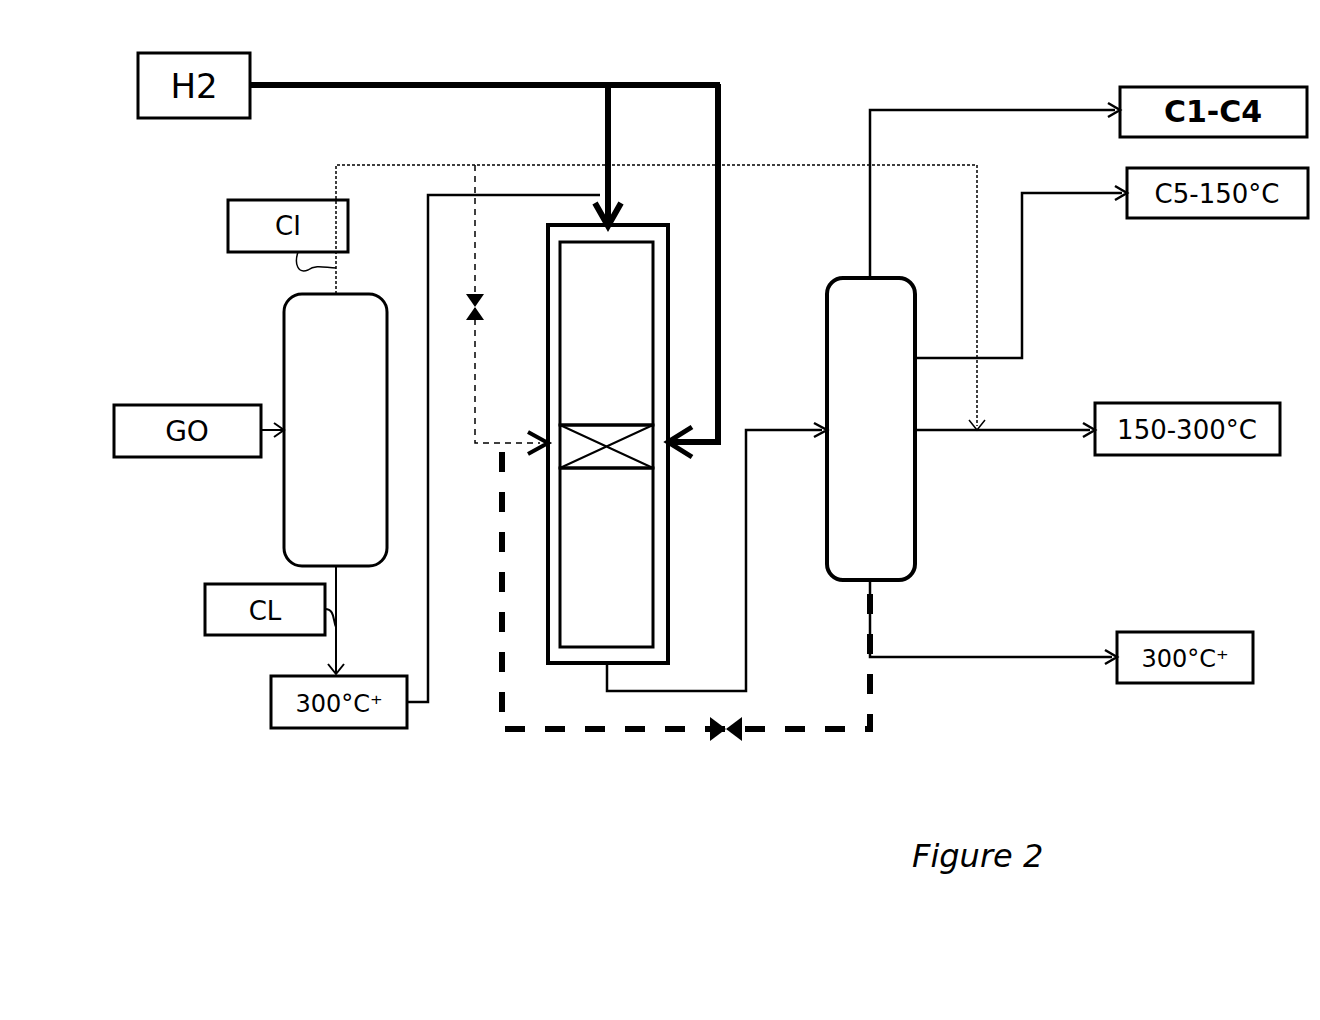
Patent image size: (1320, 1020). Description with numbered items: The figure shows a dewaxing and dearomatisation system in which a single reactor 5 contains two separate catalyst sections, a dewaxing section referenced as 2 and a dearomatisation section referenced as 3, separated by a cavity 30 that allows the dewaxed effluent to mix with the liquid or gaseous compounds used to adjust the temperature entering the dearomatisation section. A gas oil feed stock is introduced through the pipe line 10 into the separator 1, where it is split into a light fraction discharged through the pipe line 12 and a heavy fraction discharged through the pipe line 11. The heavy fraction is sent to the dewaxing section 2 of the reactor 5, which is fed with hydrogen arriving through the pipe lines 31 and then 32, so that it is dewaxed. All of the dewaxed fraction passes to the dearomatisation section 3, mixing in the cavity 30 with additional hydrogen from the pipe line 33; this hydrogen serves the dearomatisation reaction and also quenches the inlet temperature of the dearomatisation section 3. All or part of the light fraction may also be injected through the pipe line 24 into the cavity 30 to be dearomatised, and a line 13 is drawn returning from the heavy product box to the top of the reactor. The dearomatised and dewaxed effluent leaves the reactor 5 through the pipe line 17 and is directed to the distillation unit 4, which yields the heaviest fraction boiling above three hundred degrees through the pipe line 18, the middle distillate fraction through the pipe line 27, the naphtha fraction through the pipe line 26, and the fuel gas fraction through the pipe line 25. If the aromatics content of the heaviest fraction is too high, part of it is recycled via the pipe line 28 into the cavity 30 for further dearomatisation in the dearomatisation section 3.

The DF separator 1 is at (380, 556).
The dewaxing section SR1 2 is at (645, 350).
The dearomatisation section SR2 3 is at (645, 575).
The distillation unit DA1 4 is at (905, 530).
The reactor 5 is at (668, 495).
The pipe line 10 is at (270, 433).
The pipe line 11 is at (339, 646).
The pipe line 12 is at (442, 165).
The residue recycle line 13 is at (428, 655).
The pipe line 17 is at (746, 662).
The pipe line 18 is at (875, 632).
The pipe line 24 is at (478, 280).
The pipe line 25 is at (873, 228).
The pipe line 26 is at (1025, 288).
The pipe line 27 is at (1035, 428).
The pipe line 28 is at (634, 736).
The cavity 30 is at (640, 446).
The pipe line 31 is at (490, 92).
The pipe line 32 is at (612, 130).
The pipe line 33 is at (724, 135).